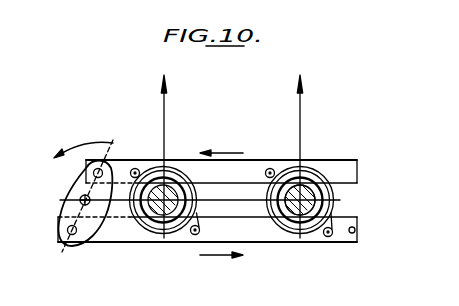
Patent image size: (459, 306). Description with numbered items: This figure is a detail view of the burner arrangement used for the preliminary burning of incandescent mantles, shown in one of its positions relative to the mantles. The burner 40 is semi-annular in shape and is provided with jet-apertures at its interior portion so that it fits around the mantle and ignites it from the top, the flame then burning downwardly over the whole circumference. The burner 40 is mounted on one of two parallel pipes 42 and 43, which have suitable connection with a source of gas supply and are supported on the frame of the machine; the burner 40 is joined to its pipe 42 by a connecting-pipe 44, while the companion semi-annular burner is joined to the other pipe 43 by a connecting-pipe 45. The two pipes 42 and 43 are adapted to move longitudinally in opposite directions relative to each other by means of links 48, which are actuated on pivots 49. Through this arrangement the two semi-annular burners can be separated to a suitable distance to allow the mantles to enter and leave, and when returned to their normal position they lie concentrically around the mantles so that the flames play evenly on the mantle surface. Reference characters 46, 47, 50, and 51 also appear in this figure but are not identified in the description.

The burner 40 is at (147, 215).
The pipe 42 is at (141, 168).
The pipe 43 is at (177, 236).
The connecting-pipe 44 is at (342, 199).
The connecting-pipe 45 is at (200, 231).
The direction arrow 46 is at (221, 144).
The direction arrow 47 is at (221, 264).
The link 48 is at (88, 238).
The pivot 49 is at (80, 200).
The swing arrow 50 is at (83, 141).
The hub 51 is at (312, 226).